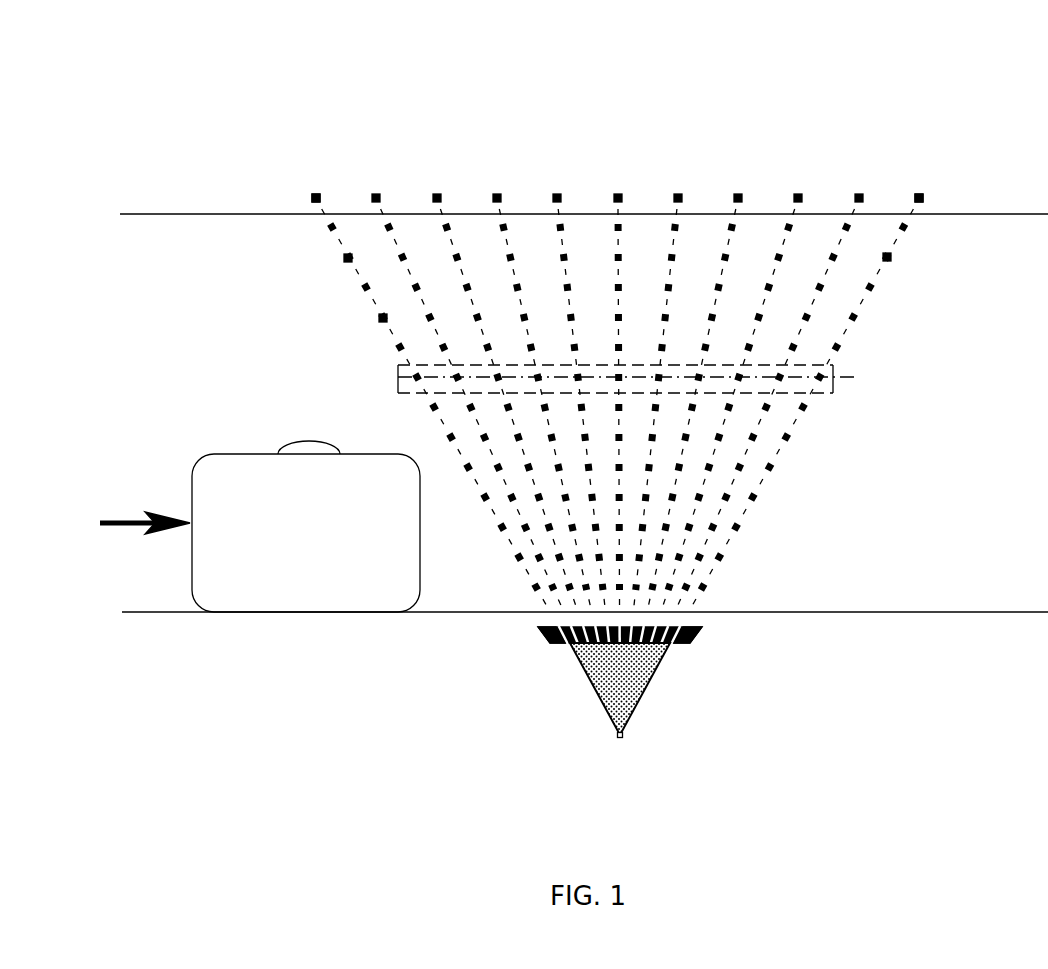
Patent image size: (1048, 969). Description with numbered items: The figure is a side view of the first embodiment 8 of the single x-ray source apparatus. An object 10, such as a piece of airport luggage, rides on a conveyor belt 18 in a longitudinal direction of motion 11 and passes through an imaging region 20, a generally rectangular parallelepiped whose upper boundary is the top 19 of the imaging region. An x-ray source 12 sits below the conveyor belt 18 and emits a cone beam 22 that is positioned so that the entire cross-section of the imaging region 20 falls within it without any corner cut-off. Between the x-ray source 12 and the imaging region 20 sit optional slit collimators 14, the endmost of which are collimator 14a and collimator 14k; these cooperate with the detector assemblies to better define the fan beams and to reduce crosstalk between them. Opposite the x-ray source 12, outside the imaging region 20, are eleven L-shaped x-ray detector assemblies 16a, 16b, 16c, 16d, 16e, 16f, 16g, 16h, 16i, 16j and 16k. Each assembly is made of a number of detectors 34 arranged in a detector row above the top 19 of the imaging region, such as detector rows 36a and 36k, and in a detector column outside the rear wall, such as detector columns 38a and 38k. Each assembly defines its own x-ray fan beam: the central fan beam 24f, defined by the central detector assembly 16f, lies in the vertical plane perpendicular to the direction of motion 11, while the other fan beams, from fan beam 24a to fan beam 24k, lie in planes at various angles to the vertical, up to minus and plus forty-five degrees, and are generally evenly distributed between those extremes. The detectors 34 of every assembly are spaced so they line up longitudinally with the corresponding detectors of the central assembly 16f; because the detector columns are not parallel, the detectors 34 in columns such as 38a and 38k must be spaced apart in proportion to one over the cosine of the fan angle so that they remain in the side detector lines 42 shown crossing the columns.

The first embodiment 8 is at (180, 81).
The object 10 is at (293, 585).
The direction of motion 11 is at (140, 517).
The x-ray source 12 is at (623, 738).
The slit collimators 14 is at (700, 646).
The slit collimator 14a is at (557, 627).
The slit collimator 14k is at (695, 627).
The x-ray detector assembly 16a is at (316, 191).
The x-ray detector assembly 16b is at (376, 191).
The x-ray detector assembly 16c is at (437, 191).
The x-ray detector assembly 16d is at (497, 191).
The x-ray detector assembly 16e is at (557, 191).
The central detector assembly 16f is at (618, 191).
The x-ray detector assembly 16g is at (678, 191).
The x-ray detector assembly 16h is at (738, 191).
The x-ray detector assembly 16i is at (798, 191).
The x-ray detector assembly 16j is at (859, 191).
The x-ray detector assembly 16k is at (919, 191).
The conveyor belt 18 is at (173, 614).
The top of the imaging region 19 is at (172, 213).
The imaging region 20 is at (896, 507).
The cone beam 22 is at (650, 682).
The x-ray fan beam 24a is at (443, 422).
The central fan beam 24f is at (620, 244).
The x-ray fan beam 24k is at (708, 571).
The detectors 34 is at (380, 322).
The detector row 36a is at (310, 199).
The detector row 36k is at (925, 197).
The detector column 38a is at (345, 259).
The detector column 38k is at (893, 261).
The side detector lines 42 is at (835, 378).